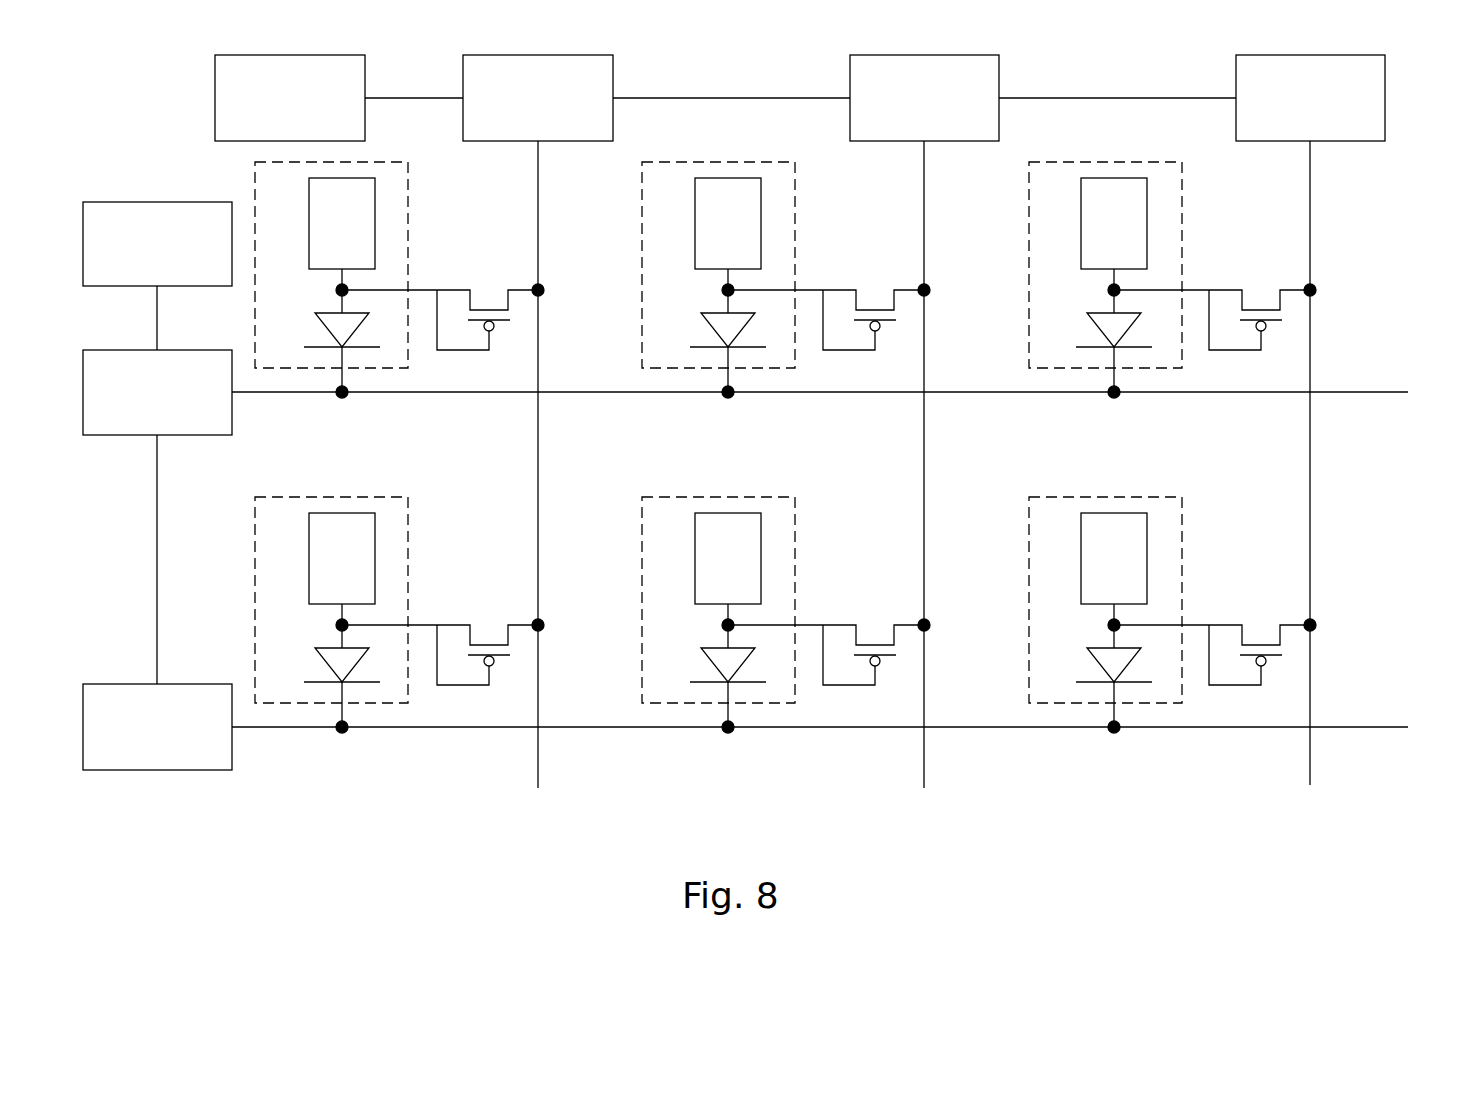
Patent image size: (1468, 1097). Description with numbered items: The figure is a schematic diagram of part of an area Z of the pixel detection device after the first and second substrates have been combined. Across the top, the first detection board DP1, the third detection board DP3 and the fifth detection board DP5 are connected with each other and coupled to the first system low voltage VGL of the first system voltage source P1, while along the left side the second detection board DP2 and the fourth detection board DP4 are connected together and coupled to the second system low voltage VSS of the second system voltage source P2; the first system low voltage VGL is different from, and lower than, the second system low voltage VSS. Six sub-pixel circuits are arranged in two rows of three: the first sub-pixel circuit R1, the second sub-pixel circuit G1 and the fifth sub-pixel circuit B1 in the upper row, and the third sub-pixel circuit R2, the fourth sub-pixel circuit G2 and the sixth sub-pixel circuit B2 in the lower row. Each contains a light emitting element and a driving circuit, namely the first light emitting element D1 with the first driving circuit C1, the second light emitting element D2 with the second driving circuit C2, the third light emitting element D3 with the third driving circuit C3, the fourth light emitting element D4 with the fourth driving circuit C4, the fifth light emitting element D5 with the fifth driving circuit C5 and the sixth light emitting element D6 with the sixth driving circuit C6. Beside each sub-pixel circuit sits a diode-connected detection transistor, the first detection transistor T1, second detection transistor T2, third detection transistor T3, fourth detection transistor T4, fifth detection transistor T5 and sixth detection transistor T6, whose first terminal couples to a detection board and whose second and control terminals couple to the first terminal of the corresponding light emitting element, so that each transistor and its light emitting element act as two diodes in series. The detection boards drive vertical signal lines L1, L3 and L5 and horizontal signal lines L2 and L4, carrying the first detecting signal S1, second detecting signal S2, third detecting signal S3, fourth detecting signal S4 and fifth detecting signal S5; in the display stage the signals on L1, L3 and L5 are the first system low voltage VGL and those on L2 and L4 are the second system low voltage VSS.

The area Z is at (150, 72).
The first system voltage source P1 is at (275, 112).
The second system voltage source P2 is at (142, 259).
The first detection board DP1 is at (513, 112).
The second detection board DP2 is at (132, 408).
The third detection board DP3 is at (899, 112).
The fourth detection board DP4 is at (132, 742).
The fifth detection board DP5 is at (1285, 112).
The first system low voltage VGL is at (414, 83).
The second system low voltage VSS is at (130, 318).
The first sub-pixel circuit R1 is at (255, 183).
The third sub-pixel circuit R2 is at (342, 497).
The second sub-pixel circuit G1 is at (642, 183).
The fourth sub-pixel circuit G2 is at (728, 497).
The fifth sub-pixel circuit B1 is at (1029, 183).
The sixth sub-pixel circuit B2 is at (1114, 497).
The first driving circuit C1 is at (326, 238).
The second driving circuit C2 is at (712, 238).
The third driving circuit C3 is at (326, 573).
The fourth driving circuit C4 is at (712, 573).
The fifth driving circuit C5 is at (1098, 238).
The sixth driving circuit C6 is at (1098, 573).
The first light emitting element D1 is at (327, 330).
The second light emitting element D2 is at (713, 330).
The third light emitting element D3 is at (327, 665).
The fourth light emitting element D4 is at (713, 665).
The fifth light emitting element D5 is at (1099, 330).
The sixth light emitting element D6 is at (1099, 665).
The first detection transistor T1 is at (443, 305).
The second detection transistor T2 is at (829, 305).
The third detection transistor T3 is at (443, 640).
The fourth detection transistor T4 is at (829, 640).
The fifth detection transistor T5 is at (1215, 305).
The sixth detection transistor T6 is at (1215, 640).
The signal line L1 is at (538, 752).
The signal line L2 is at (1378, 392).
The signal line L3 is at (924, 752).
The signal line L4 is at (1378, 727).
The signal line L5 is at (1310, 752).
The first detecting signal S1 is at (541, 805).
The second detecting signal S2 is at (1438, 392).
The third detecting signal S3 is at (927, 805).
The fourth detecting signal S4 is at (1438, 727).
The fifth detecting signal S5 is at (1316, 805).